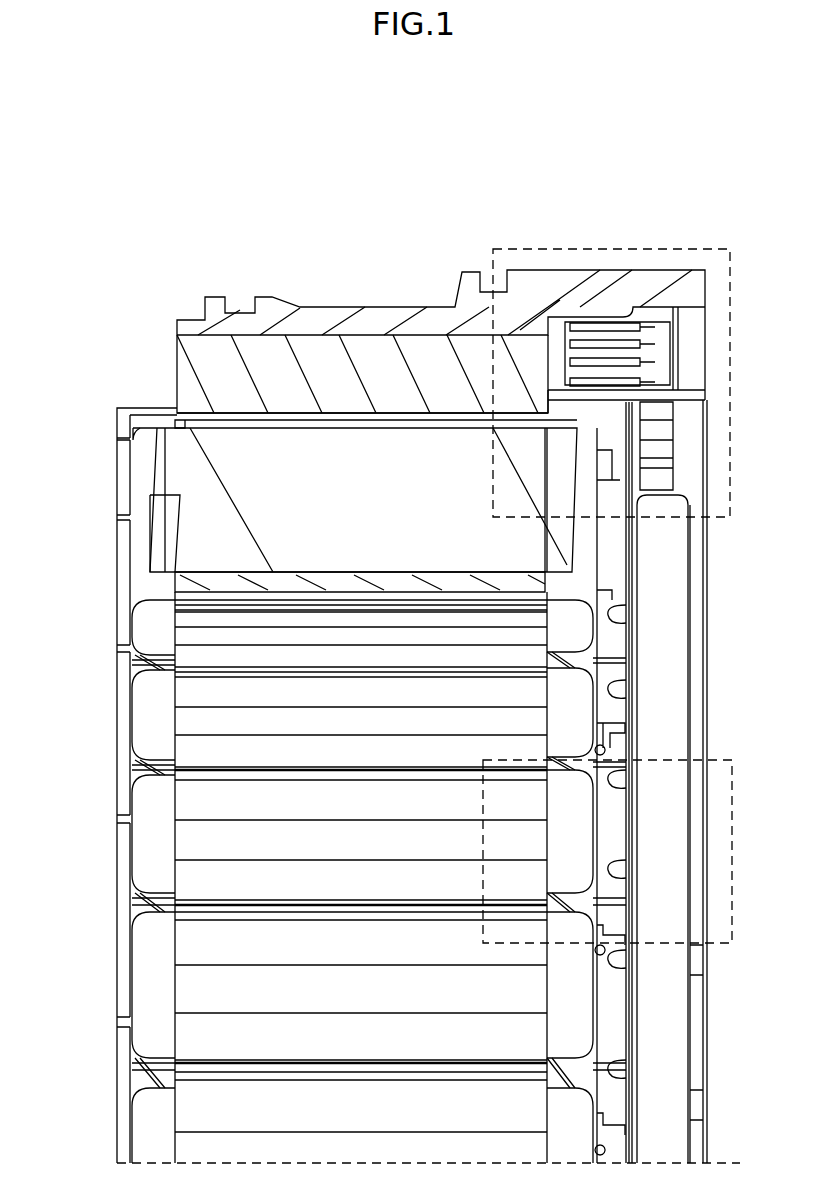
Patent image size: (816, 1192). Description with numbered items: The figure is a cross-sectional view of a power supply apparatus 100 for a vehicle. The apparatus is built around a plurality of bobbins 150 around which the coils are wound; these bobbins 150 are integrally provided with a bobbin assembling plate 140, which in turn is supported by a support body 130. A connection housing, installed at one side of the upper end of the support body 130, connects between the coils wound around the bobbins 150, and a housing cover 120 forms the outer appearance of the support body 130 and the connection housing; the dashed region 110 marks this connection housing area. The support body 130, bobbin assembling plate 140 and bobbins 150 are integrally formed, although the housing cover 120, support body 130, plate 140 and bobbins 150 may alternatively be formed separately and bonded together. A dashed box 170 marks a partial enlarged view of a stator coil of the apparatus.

The power supply apparatus 100 is at (88, 153).
The circuit board connector portion 110 is at (611, 249).
The housing cover 120 is at (207, 303).
The support body 130 is at (193, 360).
The bobbin assembling plate 140 is at (173, 420).
The bobbins 150 is at (192, 542).
The partial enlarged view of a stator coil 170 is at (732, 760).